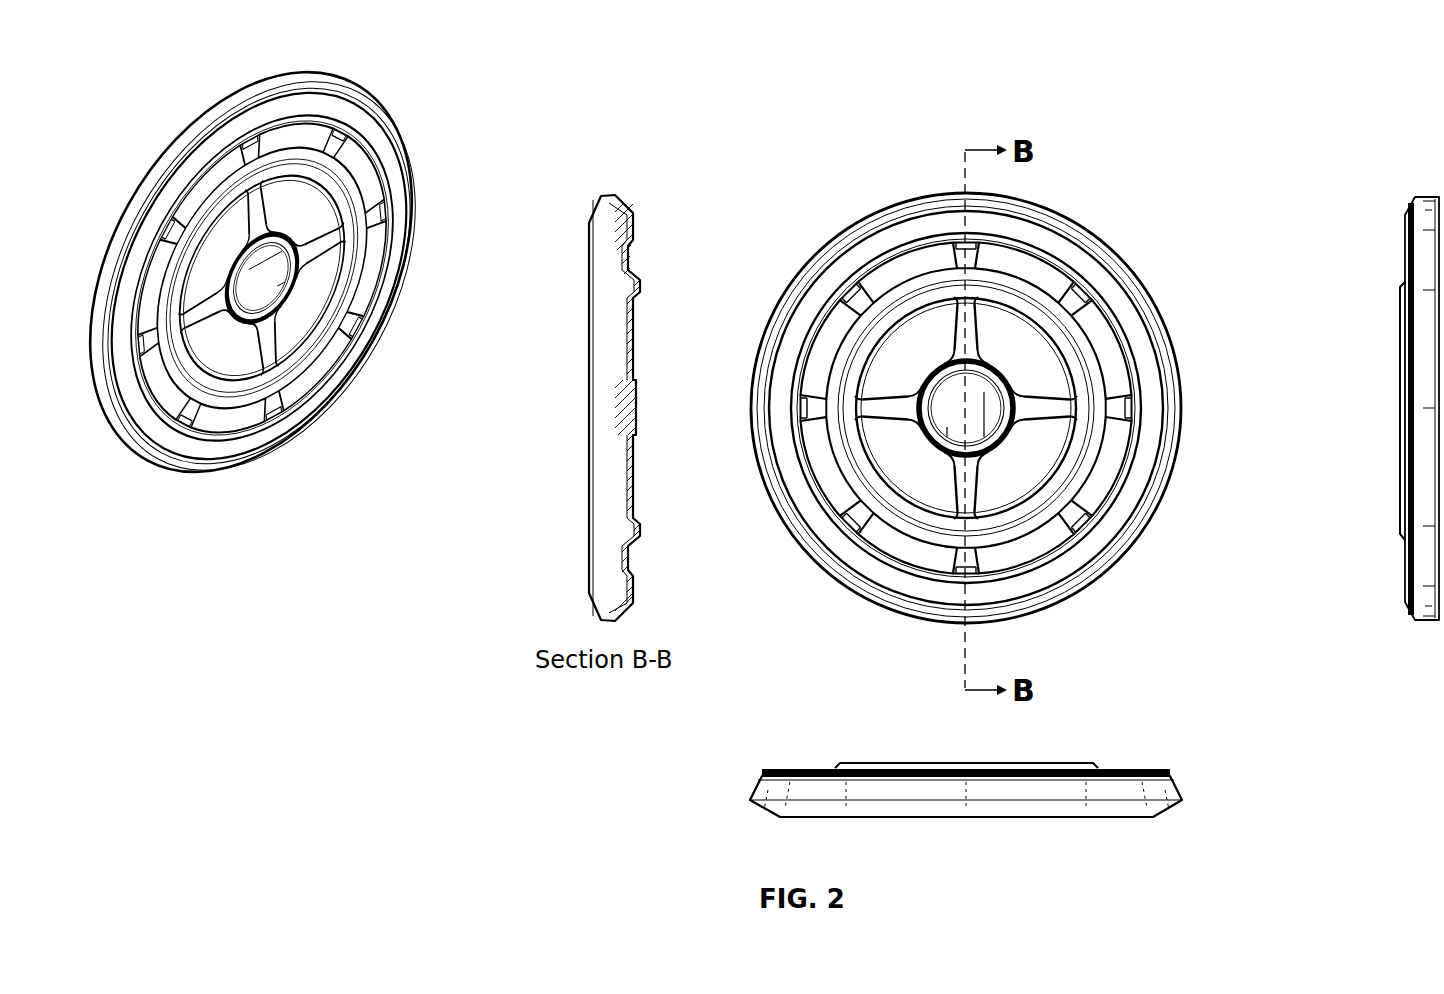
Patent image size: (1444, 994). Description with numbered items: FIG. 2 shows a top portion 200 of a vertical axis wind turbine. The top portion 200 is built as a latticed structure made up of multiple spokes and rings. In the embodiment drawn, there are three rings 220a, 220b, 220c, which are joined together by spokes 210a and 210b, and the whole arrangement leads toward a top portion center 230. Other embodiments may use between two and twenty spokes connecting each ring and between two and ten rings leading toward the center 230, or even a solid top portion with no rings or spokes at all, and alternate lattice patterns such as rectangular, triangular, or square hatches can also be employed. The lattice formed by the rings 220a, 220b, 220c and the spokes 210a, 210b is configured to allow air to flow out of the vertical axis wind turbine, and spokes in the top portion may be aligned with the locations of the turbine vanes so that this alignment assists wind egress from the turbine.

The top portion 200 is at (172, 76).
The spoke 210a is at (1075, 302).
The spoke 210b is at (1064, 408).
The ring 220a is at (1045, 235).
The ring 220b is at (1084, 369).
The ring 220c is at (1013, 444).
The top portion center 230 is at (953, 413).